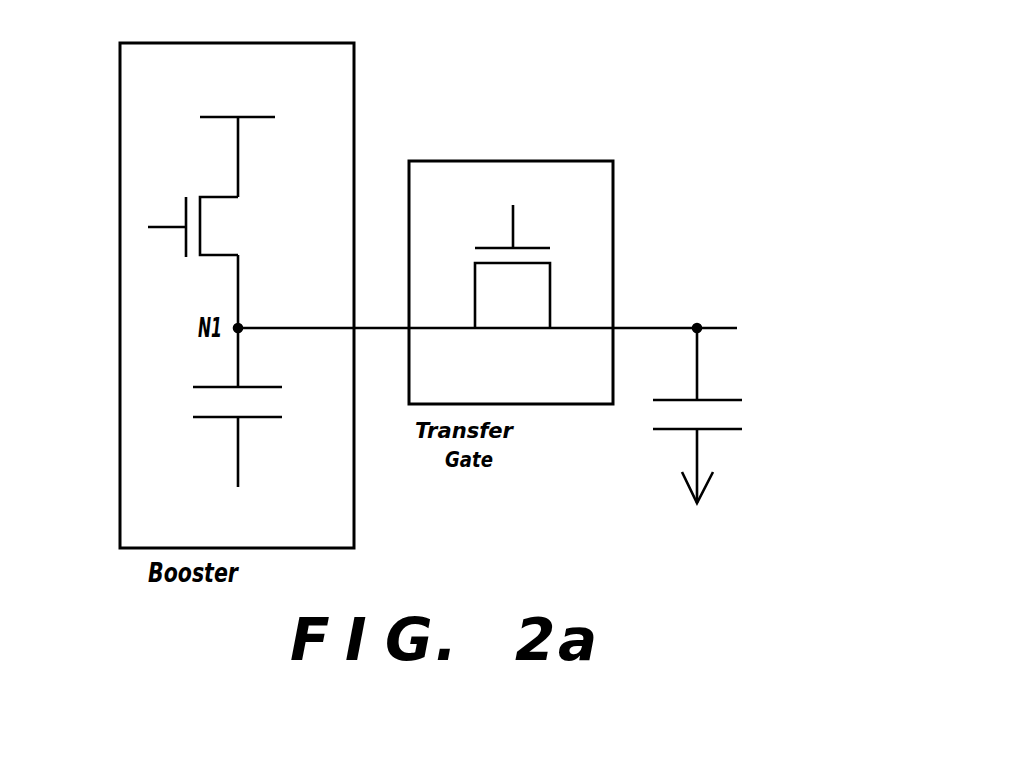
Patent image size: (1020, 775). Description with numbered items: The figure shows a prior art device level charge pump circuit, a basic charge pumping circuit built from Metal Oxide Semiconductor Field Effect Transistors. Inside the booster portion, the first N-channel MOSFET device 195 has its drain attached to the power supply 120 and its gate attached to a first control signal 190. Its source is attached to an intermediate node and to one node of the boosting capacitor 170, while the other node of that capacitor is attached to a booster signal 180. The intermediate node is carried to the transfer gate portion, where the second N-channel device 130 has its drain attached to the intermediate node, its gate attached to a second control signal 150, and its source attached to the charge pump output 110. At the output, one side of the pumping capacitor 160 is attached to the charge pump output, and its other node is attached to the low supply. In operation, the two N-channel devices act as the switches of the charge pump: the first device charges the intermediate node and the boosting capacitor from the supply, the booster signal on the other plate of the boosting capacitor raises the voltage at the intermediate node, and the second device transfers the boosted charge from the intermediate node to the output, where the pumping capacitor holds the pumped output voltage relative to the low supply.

The charge pump output VPP 110 is at (759, 311).
The VDD power supply 120 is at (212, 117).
The N-channel device MN2 130 is at (503, 363).
The signal N3 150 is at (520, 218).
The capacitor CP 160 is at (767, 432).
The capacitor CB 170 is at (150, 388).
The booster signal BST 180 is at (215, 518).
The signal N2 190 is at (163, 228).
The N-channel MOSFET device MN1 195 is at (273, 227).